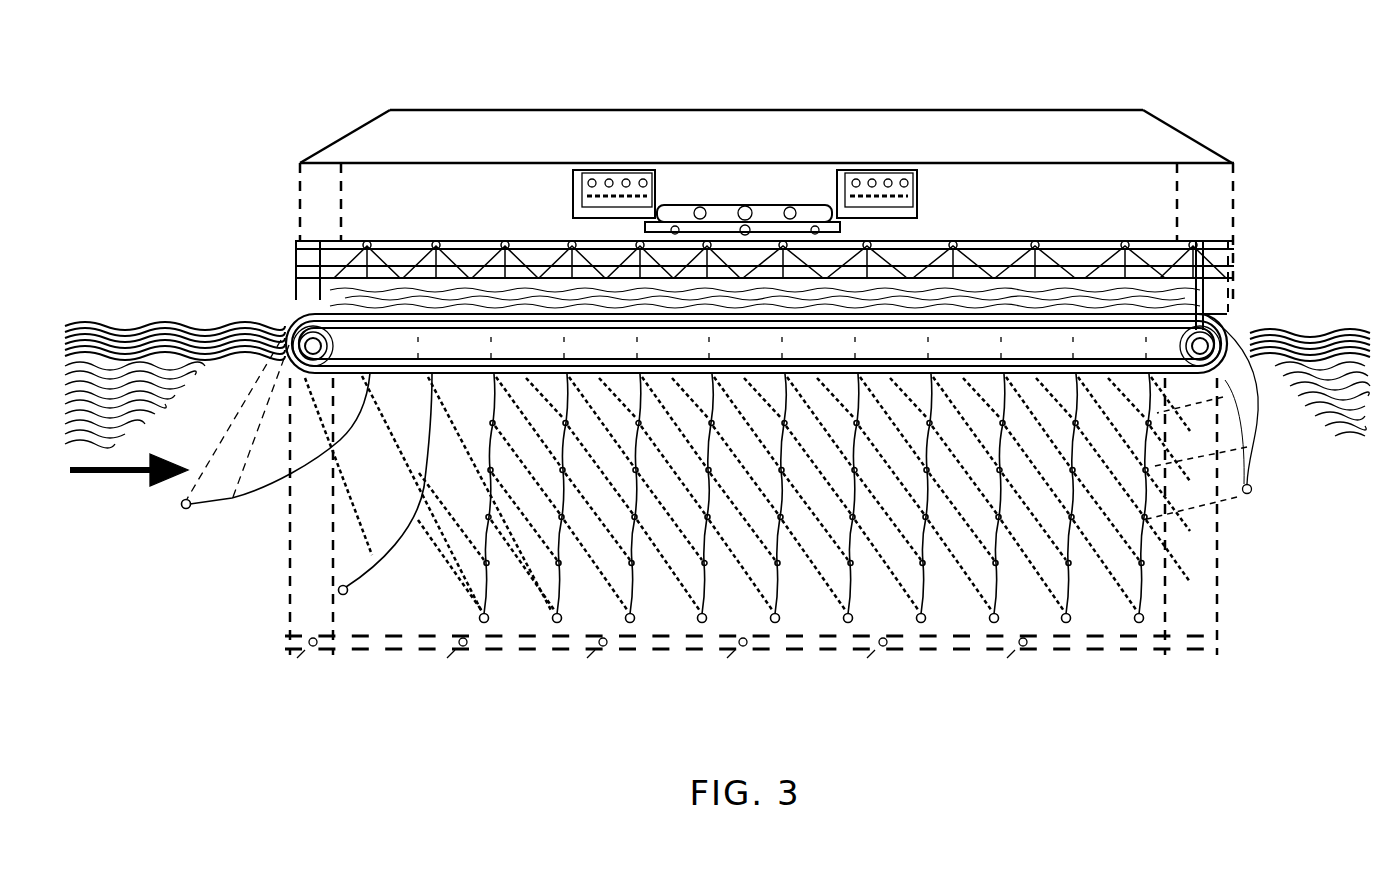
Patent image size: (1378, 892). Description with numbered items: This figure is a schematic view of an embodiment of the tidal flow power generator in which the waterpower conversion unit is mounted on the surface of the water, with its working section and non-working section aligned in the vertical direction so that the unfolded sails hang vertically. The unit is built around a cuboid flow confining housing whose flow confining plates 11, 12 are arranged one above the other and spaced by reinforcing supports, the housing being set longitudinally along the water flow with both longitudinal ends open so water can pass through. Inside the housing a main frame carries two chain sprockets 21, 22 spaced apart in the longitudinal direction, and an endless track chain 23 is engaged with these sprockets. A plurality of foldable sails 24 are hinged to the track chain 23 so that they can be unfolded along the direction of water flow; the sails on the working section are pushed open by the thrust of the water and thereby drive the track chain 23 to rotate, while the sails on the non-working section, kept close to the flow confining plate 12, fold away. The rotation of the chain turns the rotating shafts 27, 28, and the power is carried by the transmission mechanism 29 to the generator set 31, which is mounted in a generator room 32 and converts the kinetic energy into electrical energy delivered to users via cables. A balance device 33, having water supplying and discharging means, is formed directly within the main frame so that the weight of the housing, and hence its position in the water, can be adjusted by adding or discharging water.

The flow confining plate 11 is at (1122, 655).
The flow confining plate 12 is at (1233, 264).
The chain sprocket 21 is at (287, 337).
The chain sprocket 22 is at (1205, 360).
The track chain 23 is at (1140, 425).
The foldable sails 24 is at (500, 600).
The rotating shaft 27 is at (292, 333).
The rotating shaft 28 is at (1232, 378).
The transmission mechanism 29 is at (1010, 282).
The generator set 31 is at (797, 205).
The generator room 32 is at (405, 190).
The balance device 33 is at (1217, 310).